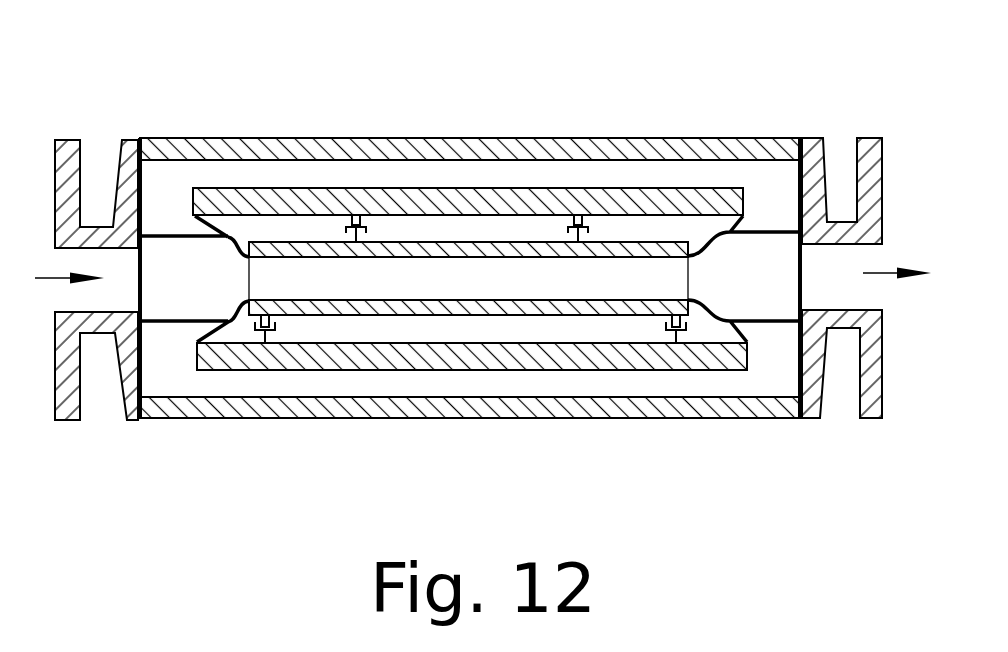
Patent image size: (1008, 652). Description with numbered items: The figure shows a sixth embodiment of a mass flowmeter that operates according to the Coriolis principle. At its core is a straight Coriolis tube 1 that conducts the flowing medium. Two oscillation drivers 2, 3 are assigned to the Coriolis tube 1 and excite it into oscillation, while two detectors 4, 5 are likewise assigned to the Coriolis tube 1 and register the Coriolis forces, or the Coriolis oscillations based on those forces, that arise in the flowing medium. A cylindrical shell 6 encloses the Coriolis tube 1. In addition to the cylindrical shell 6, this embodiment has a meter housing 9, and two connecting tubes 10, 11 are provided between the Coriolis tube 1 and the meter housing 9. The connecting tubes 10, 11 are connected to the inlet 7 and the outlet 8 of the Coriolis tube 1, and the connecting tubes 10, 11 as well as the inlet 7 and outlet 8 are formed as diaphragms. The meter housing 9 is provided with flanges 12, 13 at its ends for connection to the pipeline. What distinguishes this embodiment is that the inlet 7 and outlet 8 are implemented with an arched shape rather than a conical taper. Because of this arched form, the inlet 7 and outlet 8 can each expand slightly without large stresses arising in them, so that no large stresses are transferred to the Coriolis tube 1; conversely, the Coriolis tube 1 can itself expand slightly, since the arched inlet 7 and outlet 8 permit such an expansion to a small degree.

The Coriolis tube 1 is at (627, 247).
The oscillation driver 2 is at (270, 336).
The oscillation driver 3 is at (681, 334).
The detector 4 is at (358, 217).
The detector 5 is at (581, 212).
The cylindrical shell 6 is at (318, 200).
The inlet 7 is at (234, 232).
The outlet 8 is at (728, 357).
The meter housing 9 is at (729, 124).
The connecting tube 10 is at (175, 322).
The connecting tube 11 is at (773, 236).
The flange 12 is at (55, 140).
The flange 13 is at (873, 407).